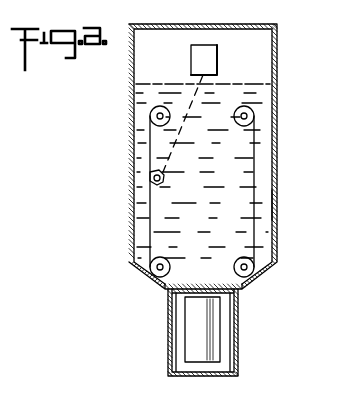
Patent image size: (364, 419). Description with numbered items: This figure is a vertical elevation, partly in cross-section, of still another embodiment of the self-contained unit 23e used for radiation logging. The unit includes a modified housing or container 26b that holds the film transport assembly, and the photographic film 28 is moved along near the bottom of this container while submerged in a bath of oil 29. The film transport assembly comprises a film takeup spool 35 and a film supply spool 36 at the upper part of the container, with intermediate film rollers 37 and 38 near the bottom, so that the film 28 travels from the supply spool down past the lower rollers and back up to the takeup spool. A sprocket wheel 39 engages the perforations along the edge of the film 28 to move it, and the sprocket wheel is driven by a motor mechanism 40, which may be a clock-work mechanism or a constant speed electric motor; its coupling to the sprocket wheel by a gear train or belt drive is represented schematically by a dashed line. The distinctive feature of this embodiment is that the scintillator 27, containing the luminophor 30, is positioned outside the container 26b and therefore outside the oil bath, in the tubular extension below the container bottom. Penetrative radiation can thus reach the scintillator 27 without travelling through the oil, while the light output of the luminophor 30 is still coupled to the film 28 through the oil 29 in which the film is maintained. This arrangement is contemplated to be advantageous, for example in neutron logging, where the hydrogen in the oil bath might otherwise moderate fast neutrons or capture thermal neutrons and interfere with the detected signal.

The self-contained unit 23e is at (282, 72).
The housing or container 26b is at (274, 205).
The scintillator 27 is at (237, 313).
The photographic film 28 is at (253, 153).
The bath of oil 29 is at (236, 181).
The luminophor 30 is at (213, 341).
The film takeup spool 35 is at (153, 113).
The film supply spool 36 is at (253, 118).
The intermediate film roller 37 is at (157, 258).
The intermediate film roller 38 is at (256, 262).
The sprocket wheel 39 is at (158, 172).
The motor mechanism 40 is at (217, 57).